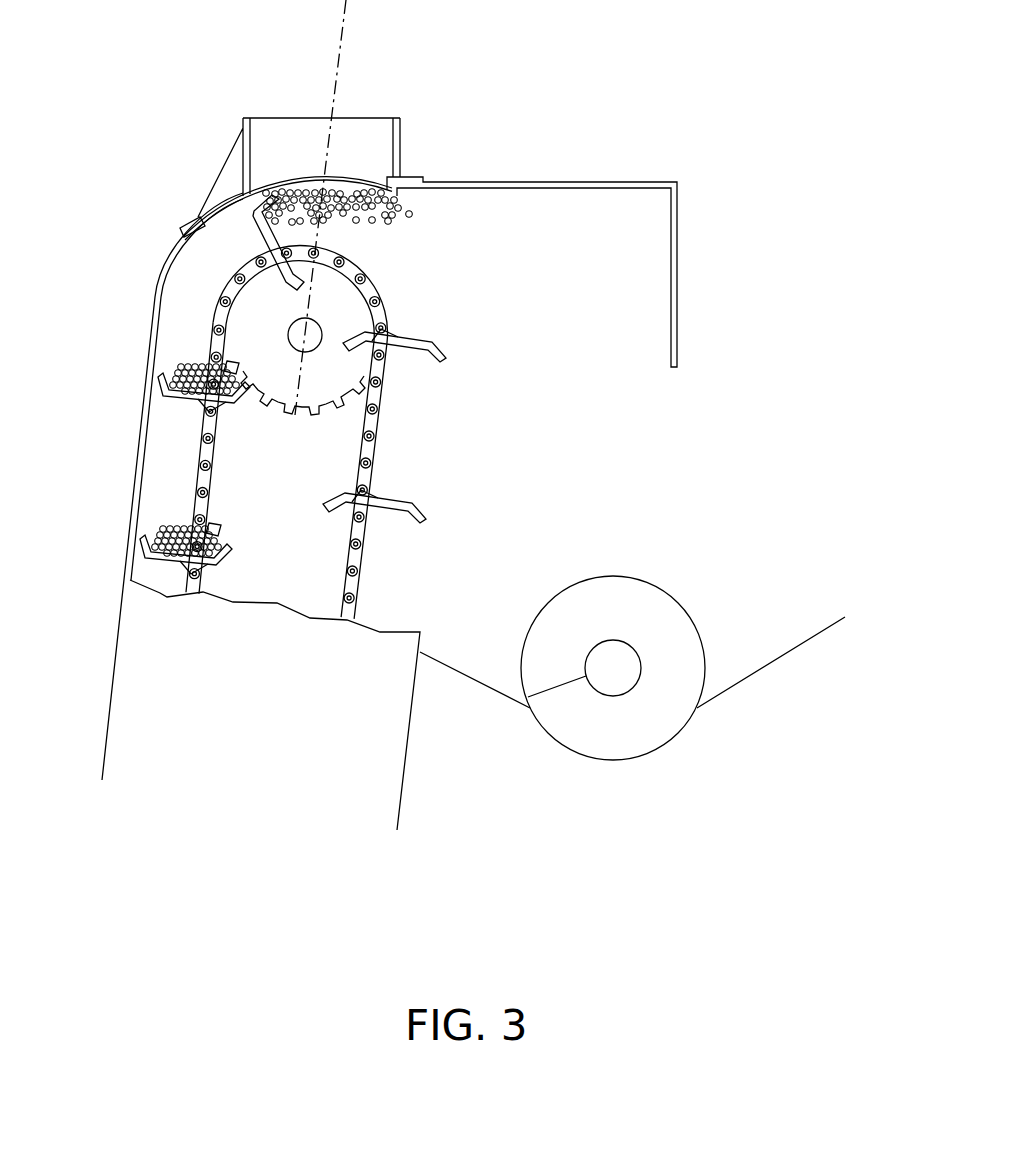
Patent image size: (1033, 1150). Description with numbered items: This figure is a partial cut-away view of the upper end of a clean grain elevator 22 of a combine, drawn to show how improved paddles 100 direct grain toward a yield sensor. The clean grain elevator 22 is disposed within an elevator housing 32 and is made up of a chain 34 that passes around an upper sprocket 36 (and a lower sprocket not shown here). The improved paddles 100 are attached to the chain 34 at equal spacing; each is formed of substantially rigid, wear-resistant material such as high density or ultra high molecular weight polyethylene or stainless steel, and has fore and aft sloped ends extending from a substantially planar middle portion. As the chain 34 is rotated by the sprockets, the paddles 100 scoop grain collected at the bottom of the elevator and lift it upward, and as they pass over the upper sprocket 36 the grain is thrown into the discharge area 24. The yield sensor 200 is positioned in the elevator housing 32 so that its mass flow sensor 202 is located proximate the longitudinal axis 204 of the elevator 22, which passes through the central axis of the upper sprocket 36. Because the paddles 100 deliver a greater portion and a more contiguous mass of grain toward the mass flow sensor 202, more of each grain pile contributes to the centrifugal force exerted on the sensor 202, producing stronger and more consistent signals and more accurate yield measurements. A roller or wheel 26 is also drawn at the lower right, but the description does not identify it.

The clean grain elevator 22 is at (173, 657).
The discharge area 24 is at (592, 442).
The roller wheel 26 is at (672, 627).
The elevator housing 32 is at (142, 510).
The chain 34 is at (207, 450).
The upper sprocket 36 is at (320, 412).
The improved paddles 100 is at (443, 356).
The yield sensor 200 is at (400, 142).
The mass flow sensor 202 is at (373, 188).
The longitudinal axis 204 is at (338, 55).